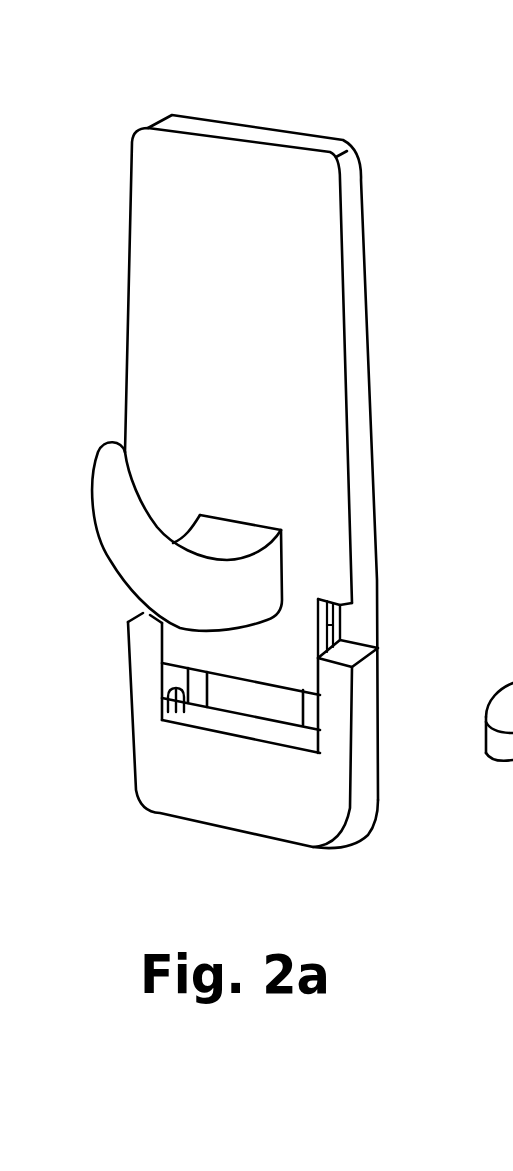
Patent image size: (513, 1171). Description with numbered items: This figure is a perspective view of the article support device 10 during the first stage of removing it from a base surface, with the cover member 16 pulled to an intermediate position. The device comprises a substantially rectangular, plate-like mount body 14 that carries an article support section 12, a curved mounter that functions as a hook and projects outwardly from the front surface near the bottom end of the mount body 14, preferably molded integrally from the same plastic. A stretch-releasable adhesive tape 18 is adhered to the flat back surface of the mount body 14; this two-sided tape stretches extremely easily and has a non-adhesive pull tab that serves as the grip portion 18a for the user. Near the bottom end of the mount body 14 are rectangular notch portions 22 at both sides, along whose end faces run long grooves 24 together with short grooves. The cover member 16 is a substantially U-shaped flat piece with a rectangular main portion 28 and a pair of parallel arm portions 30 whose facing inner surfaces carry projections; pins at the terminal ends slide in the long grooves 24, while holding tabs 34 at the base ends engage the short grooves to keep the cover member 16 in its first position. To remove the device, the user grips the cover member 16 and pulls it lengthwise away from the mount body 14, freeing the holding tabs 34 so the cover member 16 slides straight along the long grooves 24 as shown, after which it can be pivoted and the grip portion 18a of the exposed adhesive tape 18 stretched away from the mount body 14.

The article support device 10 is at (267, 103).
The article support section 12 is at (108, 480).
The mount body 14 is at (155, 182).
The cover member 16 is at (215, 803).
The stretch-releasable adhesive tape 18 is at (247, 690).
The grip portion 18a is at (280, 705).
The notch portion 22 is at (345, 605).
The long groove 24 is at (333, 622).
The main portion 28 is at (258, 810).
The arm portion 30 is at (137, 660).
The holding tab 34 is at (177, 713).